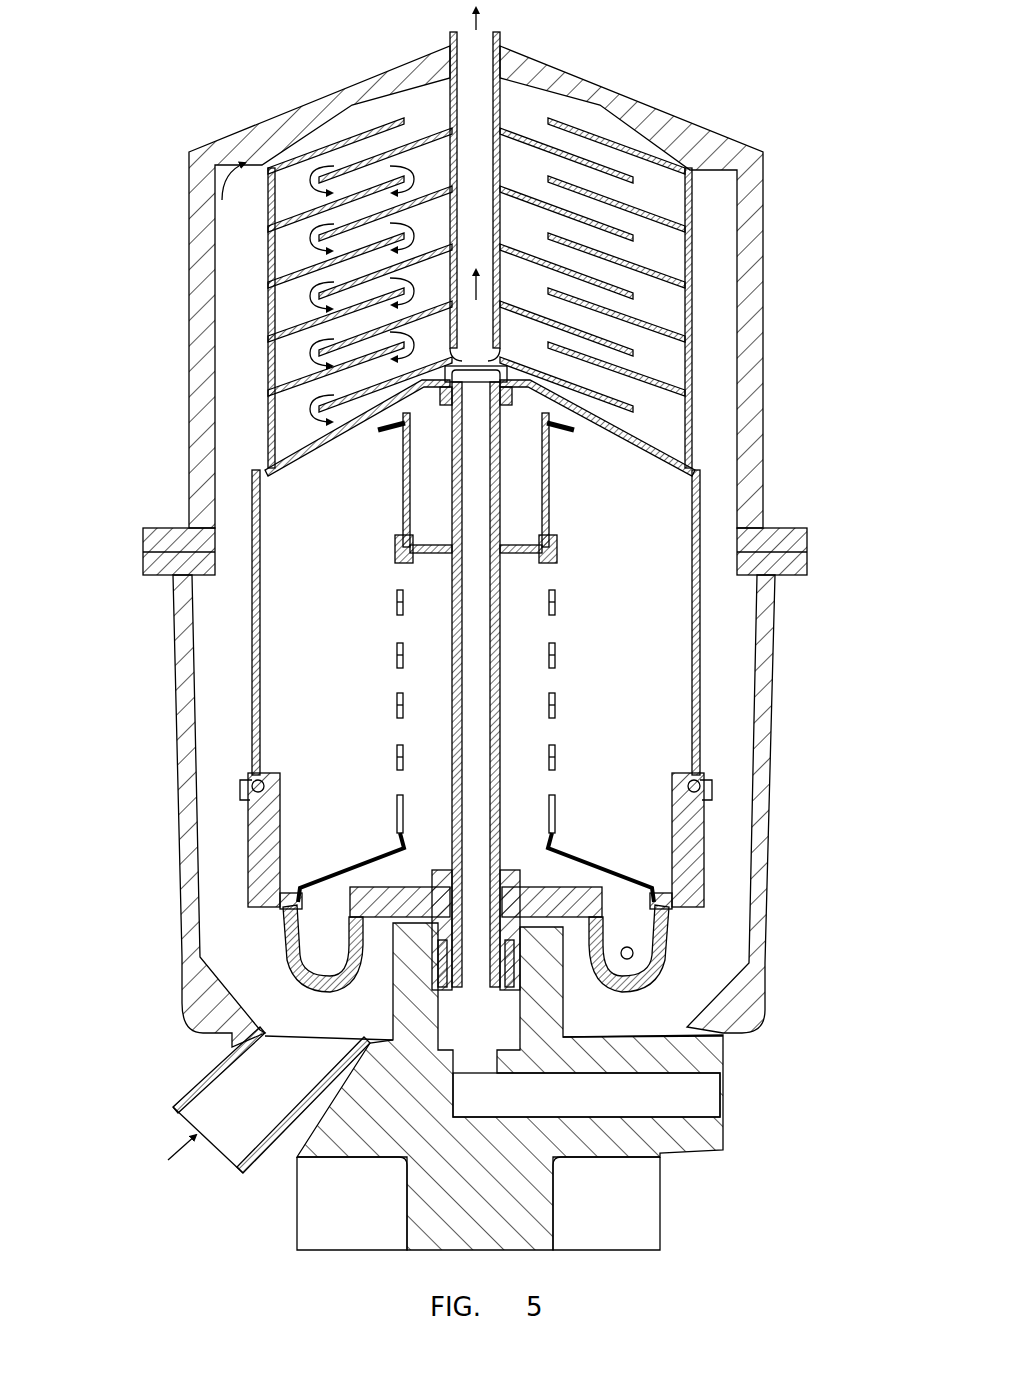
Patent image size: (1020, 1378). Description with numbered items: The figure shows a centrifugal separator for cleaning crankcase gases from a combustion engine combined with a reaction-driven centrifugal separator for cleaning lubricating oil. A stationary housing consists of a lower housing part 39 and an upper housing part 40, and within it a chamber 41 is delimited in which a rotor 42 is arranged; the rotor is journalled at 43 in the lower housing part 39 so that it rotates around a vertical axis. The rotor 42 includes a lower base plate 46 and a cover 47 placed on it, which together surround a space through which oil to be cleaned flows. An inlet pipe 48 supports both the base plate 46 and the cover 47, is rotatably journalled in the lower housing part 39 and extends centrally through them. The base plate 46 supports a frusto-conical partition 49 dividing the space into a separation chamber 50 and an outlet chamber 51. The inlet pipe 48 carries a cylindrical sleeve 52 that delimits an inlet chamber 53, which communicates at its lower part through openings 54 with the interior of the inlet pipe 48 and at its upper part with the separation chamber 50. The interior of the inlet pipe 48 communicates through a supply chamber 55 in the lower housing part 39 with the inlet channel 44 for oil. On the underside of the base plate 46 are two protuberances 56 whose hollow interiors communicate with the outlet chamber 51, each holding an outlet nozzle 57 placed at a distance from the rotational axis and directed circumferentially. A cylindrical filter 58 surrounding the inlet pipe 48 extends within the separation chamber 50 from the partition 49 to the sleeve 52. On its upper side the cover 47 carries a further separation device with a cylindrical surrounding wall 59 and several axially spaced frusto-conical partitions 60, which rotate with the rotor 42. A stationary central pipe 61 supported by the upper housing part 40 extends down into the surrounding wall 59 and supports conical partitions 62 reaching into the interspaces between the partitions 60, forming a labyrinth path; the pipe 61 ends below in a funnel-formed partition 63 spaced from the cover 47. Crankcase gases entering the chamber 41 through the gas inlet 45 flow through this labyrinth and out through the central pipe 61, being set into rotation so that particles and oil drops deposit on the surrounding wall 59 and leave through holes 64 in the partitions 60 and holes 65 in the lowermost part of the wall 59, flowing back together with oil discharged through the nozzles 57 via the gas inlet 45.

The lower housing part 39 is at (185, 772).
The upper housing part 40 is at (200, 370).
The chamber 41 is at (212, 602).
The rotor 42 is at (250, 667).
The journal 43 is at (437, 950).
The inlet channel 44 is at (712, 1100).
The gas inlet 45 is at (212, 1122).
The base plate 46 is at (692, 818).
The cover 47 is at (702, 745).
The inlet pipe 48 is at (500, 690).
The frusto-conical partition 49 is at (322, 870).
The separation chamber 50 is at (663, 652).
The outlet chamber 51 is at (600, 870).
The cylindrical sleeve 52 is at (549, 510).
The inlet chamber 53 is at (423, 480).
The openings 54 is at (455, 513).
The supply chamber 55 is at (490, 1027).
The protuberances 56 is at (655, 945).
The outlet nozzle 57 is at (522, 950).
The cylindrical filter 58 is at (700, 603).
The cylindrical surrounding wall 59 is at (692, 245).
The frusto-conical partitions 60 is at (320, 298).
The central pipe 61 is at (447, 100).
The conical partitions 62 is at (622, 235).
The funnel-formed partition 63 is at (343, 387).
The holes 64 is at (693, 273).
The holes 65 is at (694, 440).